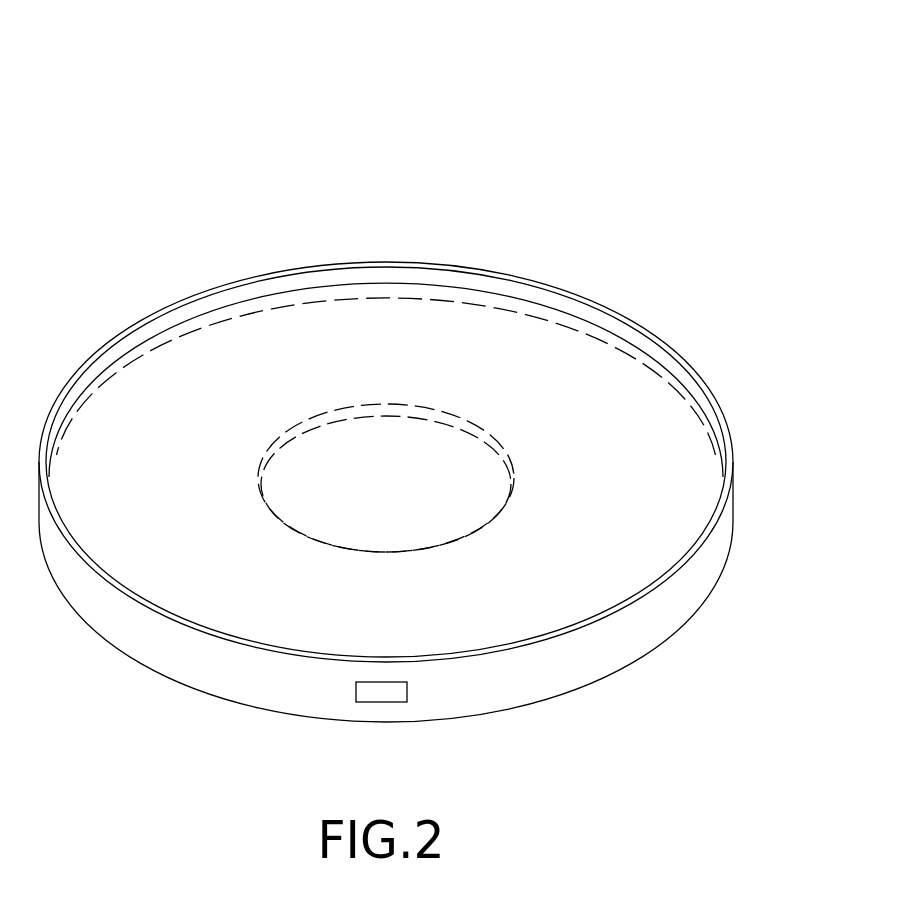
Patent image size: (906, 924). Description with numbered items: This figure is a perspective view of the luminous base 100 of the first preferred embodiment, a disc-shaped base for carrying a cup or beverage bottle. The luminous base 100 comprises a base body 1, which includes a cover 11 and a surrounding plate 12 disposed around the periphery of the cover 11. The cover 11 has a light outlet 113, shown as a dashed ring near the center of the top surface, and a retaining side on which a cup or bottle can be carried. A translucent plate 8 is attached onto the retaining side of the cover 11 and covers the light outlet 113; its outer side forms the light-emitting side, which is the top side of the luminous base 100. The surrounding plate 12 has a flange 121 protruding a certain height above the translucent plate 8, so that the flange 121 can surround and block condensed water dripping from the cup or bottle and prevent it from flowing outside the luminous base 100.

The luminous base 100 is at (106, 48).
The base body 1 is at (556, 665).
The cover 11 is at (617, 348).
The surrounding plate 12 is at (655, 612).
The light outlet 113 is at (368, 412).
The flange 121 is at (250, 277).
The translucent plate 8 is at (492, 366).